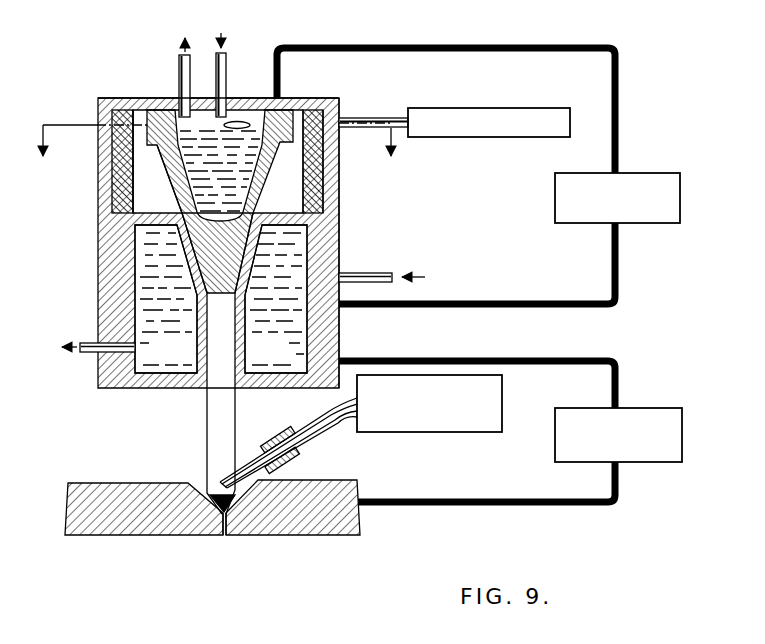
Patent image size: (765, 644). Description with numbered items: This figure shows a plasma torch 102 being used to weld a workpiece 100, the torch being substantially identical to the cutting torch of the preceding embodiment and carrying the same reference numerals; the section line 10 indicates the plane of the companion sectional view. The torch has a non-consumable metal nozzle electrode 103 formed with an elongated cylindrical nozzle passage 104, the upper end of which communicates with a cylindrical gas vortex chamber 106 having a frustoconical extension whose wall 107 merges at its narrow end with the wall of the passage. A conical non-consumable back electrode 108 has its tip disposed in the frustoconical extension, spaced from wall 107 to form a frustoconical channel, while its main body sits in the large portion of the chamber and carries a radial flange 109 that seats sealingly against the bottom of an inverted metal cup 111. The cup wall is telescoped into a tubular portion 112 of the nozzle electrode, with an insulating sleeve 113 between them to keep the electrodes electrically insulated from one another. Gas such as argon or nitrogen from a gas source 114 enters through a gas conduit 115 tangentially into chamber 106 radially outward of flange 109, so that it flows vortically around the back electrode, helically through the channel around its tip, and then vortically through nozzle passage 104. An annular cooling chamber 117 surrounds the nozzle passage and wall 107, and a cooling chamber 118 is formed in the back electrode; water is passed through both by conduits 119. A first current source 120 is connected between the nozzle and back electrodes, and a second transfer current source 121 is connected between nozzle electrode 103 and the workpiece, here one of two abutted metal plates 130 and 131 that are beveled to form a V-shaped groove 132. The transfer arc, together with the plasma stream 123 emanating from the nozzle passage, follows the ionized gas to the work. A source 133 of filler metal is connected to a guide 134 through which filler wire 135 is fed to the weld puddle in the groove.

The section line 10 is at (219, 159).
The workpiece 100 is at (191, 515).
The plasma torch 102 is at (94, 254).
The nozzle electrode 103 is at (338, 238).
The nozzle passage 104 is at (206, 347).
The gas vortex chamber 106 is at (287, 201).
The wall of frustoconical extension 107 is at (134, 216).
The back electrode 108 is at (180, 189).
The radial flange 109 is at (157, 110).
The inverted metal cup 111 is at (243, 100).
The tubular portion 112 is at (339, 101).
The insulating sleeve 113 is at (337, 196).
The gas source 114 is at (505, 138).
The gas conduit 115 is at (402, 114).
The annular cooling chamber 117 is at (283, 358).
The cooling chamber 118 is at (233, 176).
The conduits 119 is at (221, 52).
The first current source 120 is at (681, 212).
The second current source 121 is at (683, 440).
The transfer arc and plasma stream 123 is at (207, 416).
The metal plate 130 is at (157, 525).
The metal plate 131 is at (303, 525).
The V-shaped groove 132 is at (232, 516).
The source of filler metal 133 is at (457, 433).
The filler metal guide 134 is at (325, 423).
The filler wire 135 is at (228, 493).